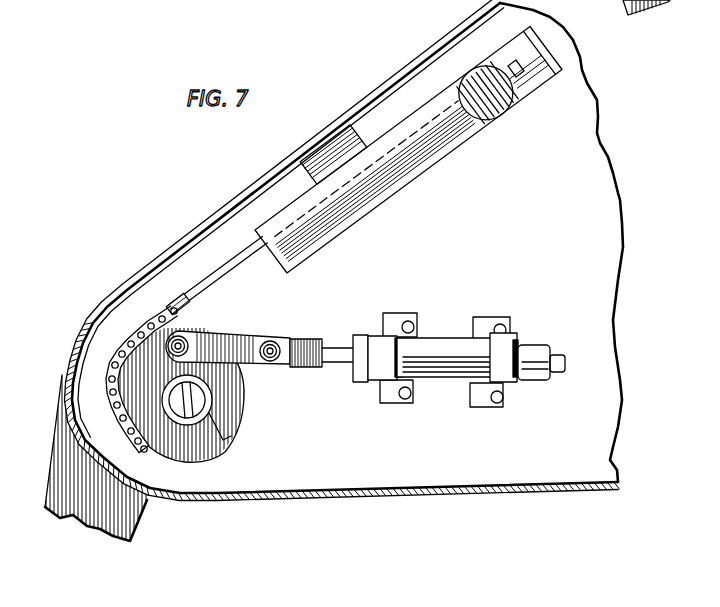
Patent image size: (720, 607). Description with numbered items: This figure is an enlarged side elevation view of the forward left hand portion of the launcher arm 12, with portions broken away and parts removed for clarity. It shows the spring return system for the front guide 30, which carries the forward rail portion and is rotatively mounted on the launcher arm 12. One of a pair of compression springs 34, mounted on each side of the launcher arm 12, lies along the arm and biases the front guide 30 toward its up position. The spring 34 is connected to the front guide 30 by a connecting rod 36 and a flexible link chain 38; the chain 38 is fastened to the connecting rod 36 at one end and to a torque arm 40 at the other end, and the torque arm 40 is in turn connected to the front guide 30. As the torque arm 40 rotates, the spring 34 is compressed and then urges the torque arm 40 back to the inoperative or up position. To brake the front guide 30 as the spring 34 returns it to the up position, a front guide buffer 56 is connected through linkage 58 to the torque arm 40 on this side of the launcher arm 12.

The launcher arm 12 is at (302, 147).
The front guide 30 is at (143, 528).
The compression springs 34 is at (470, 84).
The connecting rods 36 is at (216, 275).
The flexible link chains 38 is at (138, 330).
The torque arms 40 is at (172, 331).
The front guide buffer 56 is at (433, 337).
The linkage 58 is at (252, 343).